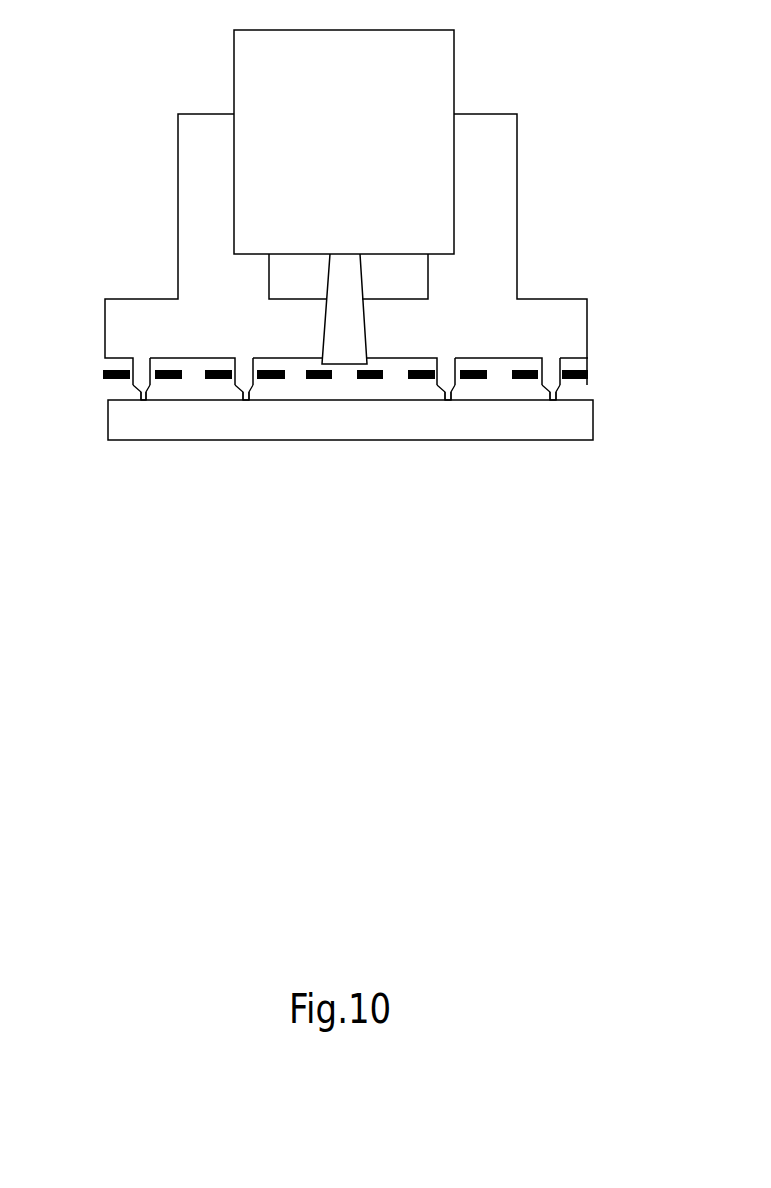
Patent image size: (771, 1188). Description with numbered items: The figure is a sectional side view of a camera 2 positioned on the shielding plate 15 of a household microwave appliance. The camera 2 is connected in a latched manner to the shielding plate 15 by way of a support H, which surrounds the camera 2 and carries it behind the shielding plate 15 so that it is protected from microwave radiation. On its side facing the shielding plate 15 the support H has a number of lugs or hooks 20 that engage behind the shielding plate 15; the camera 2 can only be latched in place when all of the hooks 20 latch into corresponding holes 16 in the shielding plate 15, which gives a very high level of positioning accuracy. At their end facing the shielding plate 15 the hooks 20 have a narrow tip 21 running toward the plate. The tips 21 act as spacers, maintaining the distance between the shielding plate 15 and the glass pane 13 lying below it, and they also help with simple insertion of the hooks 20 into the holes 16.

The camera 2 is at (508, 58).
The support H is at (565, 182).
The glass pane 13 is at (652, 446).
The shielding plate 15 is at (650, 402).
The holes 16 is at (125, 372).
The hooks 20 is at (138, 392).
The tip 21 is at (150, 400).